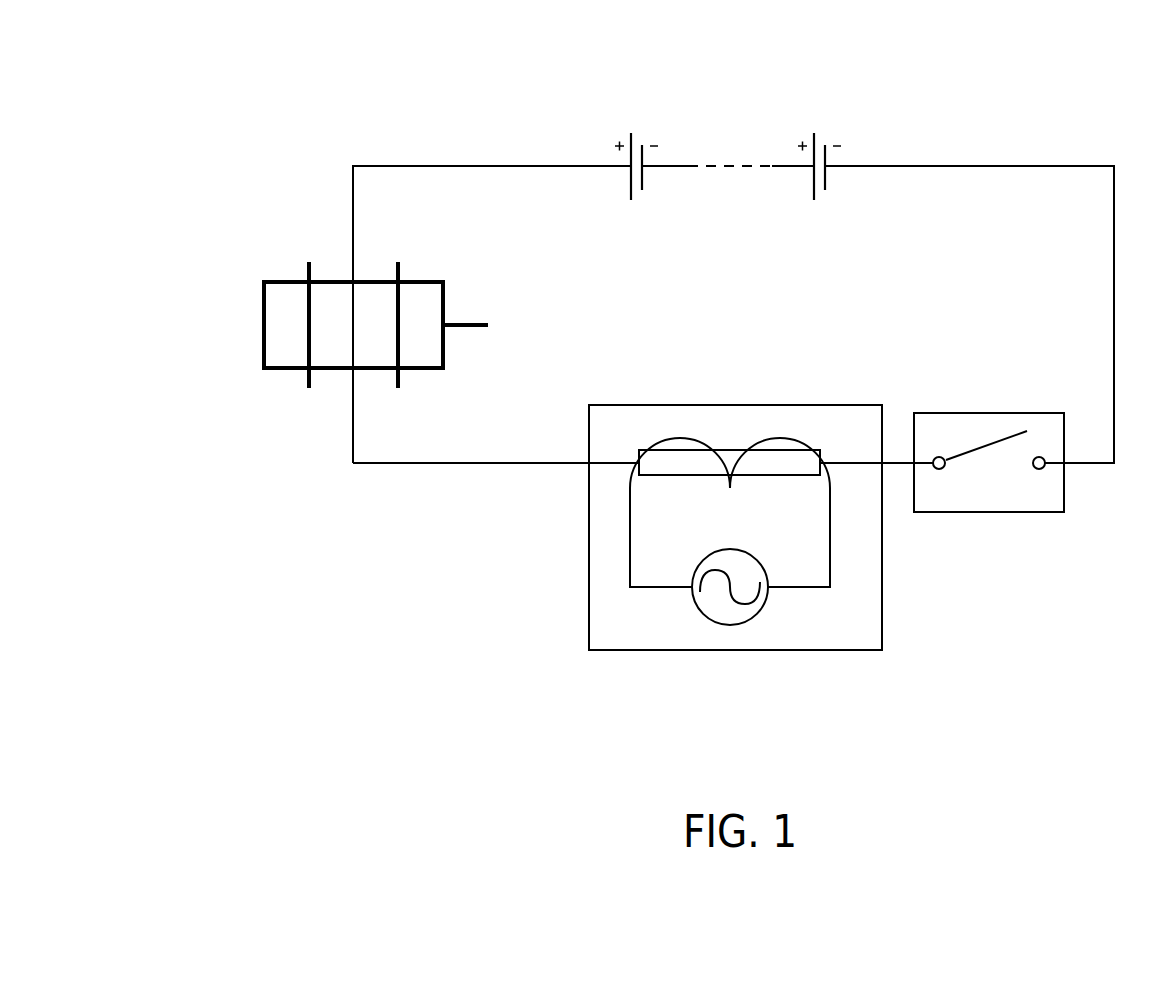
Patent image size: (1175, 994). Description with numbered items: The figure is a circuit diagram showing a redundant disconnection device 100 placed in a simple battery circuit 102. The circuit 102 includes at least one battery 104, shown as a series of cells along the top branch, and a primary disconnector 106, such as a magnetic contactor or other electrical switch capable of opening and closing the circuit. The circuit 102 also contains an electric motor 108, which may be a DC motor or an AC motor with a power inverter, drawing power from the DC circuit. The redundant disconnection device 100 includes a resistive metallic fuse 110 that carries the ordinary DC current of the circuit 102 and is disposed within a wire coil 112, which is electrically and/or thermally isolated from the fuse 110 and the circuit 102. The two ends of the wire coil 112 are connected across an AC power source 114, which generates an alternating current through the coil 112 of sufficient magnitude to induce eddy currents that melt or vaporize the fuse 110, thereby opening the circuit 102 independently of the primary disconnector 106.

The redundant disconnection device 100 is at (589, 550).
The battery circuit 102 is at (276, 119).
The battery 104 is at (839, 130).
The primary disconnector 106 is at (1066, 500).
The electric motor 108 is at (264, 370).
The resistive metallic fuse 110 is at (728, 450).
The wire coil 112 is at (790, 438).
The AC power source 114 is at (752, 620).